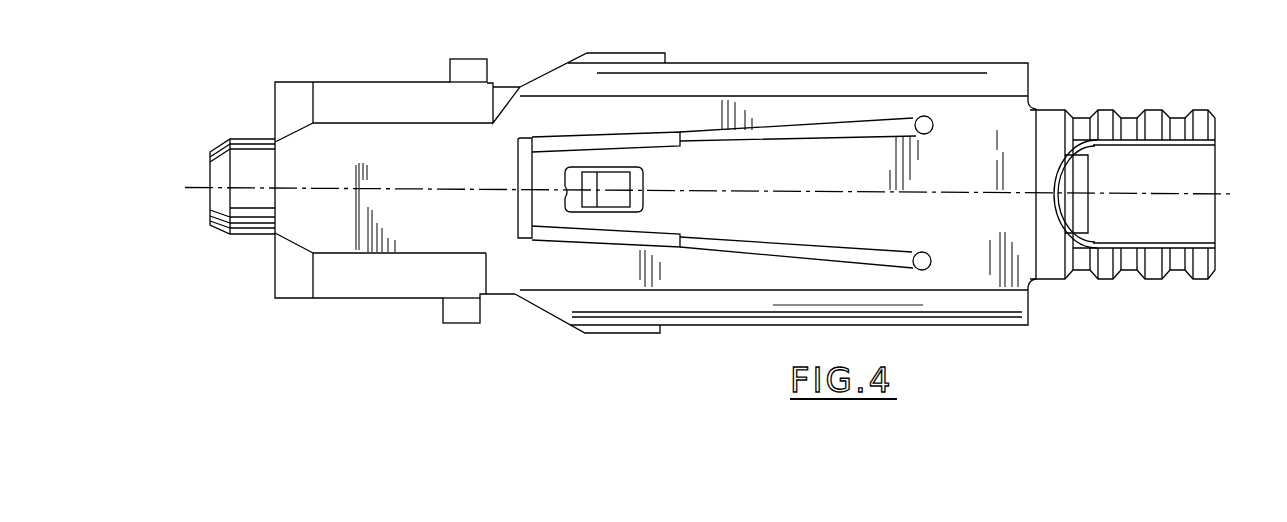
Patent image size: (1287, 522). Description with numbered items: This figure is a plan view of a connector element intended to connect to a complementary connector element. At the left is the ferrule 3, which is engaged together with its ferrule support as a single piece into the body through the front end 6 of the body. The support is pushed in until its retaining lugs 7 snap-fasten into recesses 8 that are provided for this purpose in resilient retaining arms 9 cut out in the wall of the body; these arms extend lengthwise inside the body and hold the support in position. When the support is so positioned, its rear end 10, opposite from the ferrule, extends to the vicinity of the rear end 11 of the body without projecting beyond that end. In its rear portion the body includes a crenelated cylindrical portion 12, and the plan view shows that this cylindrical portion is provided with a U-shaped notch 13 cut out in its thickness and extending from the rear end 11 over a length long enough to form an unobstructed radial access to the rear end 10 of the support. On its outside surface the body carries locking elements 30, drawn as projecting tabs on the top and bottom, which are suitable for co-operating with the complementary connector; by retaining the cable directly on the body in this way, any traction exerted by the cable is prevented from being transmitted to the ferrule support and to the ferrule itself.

The ferrule 3 is at (245, 212).
The front end of the body 6 is at (254, 99).
The retaining lugs 7 is at (612, 200).
The recesses 8 is at (577, 183).
The resilient retaining arms 9 is at (792, 163).
The rear end of the support 10 is at (1088, 220).
The rear end of the body 11 is at (1217, 130).
The crenelated cylindrical portion 12 is at (1213, 55).
The U-shaped notch 13 is at (1185, 223).
The locking elements 30 is at (468, 66).